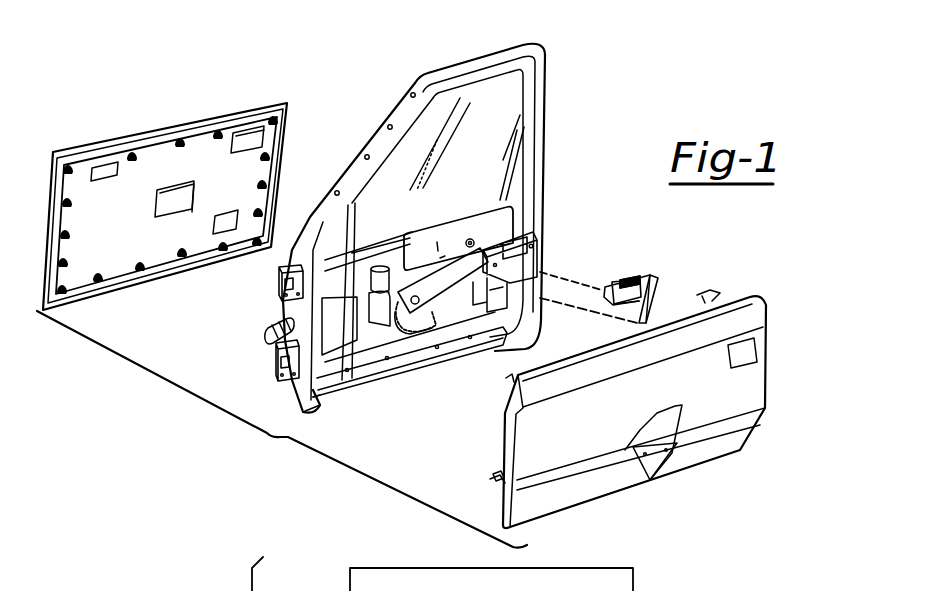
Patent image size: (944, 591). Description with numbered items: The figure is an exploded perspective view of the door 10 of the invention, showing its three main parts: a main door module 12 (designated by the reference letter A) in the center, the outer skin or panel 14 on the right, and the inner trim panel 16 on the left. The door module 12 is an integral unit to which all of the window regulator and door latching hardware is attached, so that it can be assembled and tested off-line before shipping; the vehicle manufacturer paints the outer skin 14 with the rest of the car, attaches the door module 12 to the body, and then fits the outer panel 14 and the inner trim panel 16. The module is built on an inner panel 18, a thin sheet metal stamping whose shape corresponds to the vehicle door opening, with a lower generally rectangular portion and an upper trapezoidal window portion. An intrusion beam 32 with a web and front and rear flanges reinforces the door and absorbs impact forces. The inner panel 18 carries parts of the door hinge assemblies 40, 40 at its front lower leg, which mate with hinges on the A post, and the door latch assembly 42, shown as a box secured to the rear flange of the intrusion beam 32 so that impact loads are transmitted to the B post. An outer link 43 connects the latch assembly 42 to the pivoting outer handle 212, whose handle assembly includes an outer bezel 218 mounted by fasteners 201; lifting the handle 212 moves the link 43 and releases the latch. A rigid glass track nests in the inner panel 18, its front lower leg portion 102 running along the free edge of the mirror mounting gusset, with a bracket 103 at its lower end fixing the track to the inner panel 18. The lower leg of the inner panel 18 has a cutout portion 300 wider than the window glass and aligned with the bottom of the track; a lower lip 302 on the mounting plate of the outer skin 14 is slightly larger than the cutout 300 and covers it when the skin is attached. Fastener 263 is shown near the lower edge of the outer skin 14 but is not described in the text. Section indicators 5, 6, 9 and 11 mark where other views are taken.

The inner trim panel 16 is at (186, 99).
The door module A is at (547, 141).
The door 10 is at (467, 197).
The section line 9 is at (481, 54).
The section line 6 is at (510, 33).
The section line 5 is at (383, 106).
The regulator mounting plate / section line 11 is at (483, 237).
The door hinge assembly 40 is at (279, 290).
The front lower leg portion of glass track 102 is at (273, 353).
The bracket 103 is at (287, 387).
The inner panel 18 is at (289, 397).
The main door module 12 is at (231, 350).
The intrusion beam 32 is at (371, 338).
The cutout portion 300 is at (350, 380).
The door latch assembly 42 is at (497, 327).
The outer bezel 218 is at (658, 275).
The fasteners 201 is at (603, 288).
The outer link 43 is at (657, 279).
The outer handle 212 is at (630, 303).
The outer skin or panel 14 is at (786, 329).
The lower lip 302 is at (650, 480).
The fastener 263 is at (493, 477).